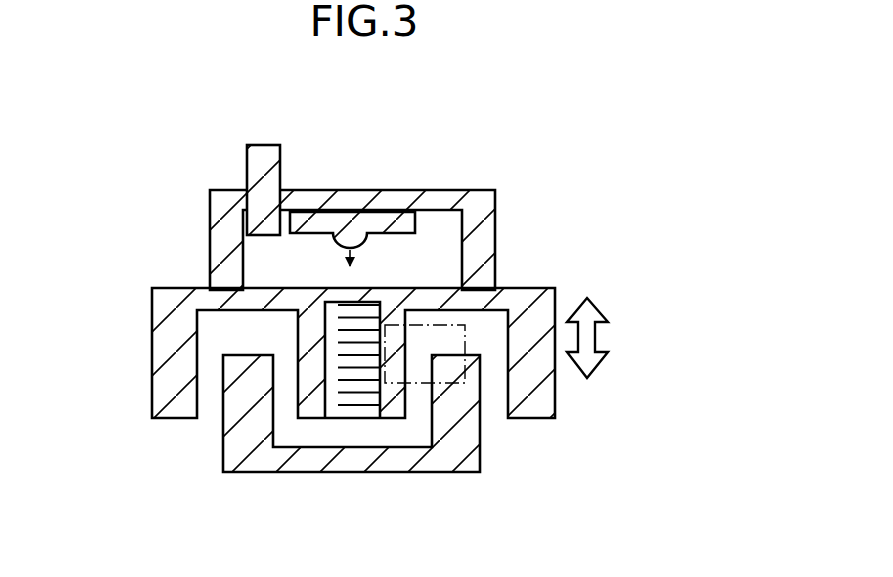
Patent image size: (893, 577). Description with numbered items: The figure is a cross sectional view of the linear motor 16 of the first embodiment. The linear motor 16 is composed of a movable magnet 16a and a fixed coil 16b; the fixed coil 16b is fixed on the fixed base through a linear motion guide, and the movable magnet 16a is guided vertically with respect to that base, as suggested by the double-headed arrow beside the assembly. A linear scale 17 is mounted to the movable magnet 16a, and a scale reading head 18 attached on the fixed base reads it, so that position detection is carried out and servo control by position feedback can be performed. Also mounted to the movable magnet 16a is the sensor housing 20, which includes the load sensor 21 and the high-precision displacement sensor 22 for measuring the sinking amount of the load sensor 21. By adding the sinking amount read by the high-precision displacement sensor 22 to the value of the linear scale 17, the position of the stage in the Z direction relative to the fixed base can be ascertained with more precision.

The linear motor 16 is at (549, 150).
The movable magnet 16a is at (160, 330).
The fixed coil 16b is at (470, 452).
The linear scale 17 is at (353, 402).
The scale reading head 18 is at (418, 372).
The sensor housing 20 is at (468, 200).
The load sensor 21 is at (390, 218).
The high-precision displacement sensor 22 is at (264, 150).